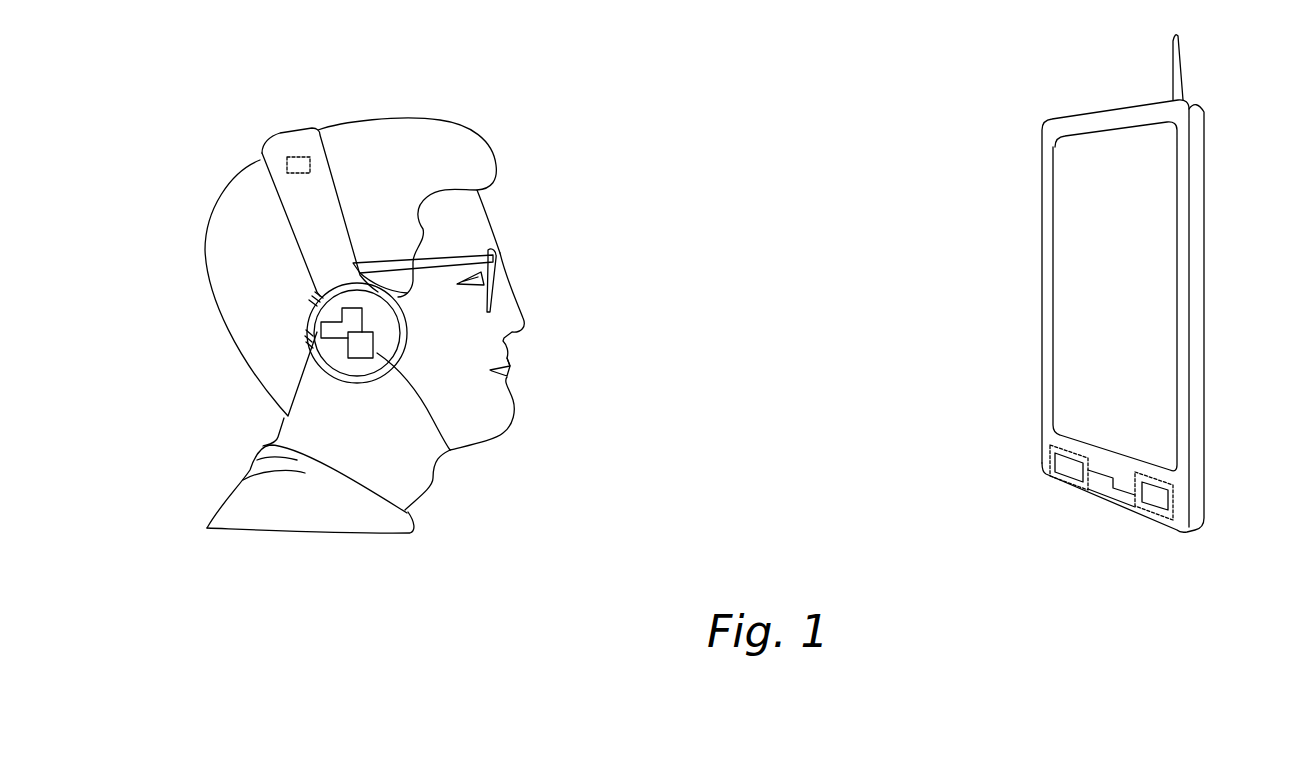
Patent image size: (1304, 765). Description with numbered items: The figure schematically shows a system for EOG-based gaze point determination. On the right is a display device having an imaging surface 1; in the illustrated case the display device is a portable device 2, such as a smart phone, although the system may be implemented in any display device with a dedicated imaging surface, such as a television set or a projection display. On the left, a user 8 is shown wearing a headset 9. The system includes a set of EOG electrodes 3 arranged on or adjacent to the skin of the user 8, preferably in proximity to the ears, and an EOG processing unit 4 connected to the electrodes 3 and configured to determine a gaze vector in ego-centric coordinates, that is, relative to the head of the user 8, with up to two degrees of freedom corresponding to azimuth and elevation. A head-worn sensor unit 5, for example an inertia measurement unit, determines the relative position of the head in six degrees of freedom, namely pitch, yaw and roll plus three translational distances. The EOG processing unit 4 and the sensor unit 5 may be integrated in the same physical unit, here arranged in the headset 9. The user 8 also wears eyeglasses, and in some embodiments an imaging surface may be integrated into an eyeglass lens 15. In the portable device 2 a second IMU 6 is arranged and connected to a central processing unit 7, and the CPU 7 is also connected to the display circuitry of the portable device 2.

The imaging surface 1 is at (1161, 323).
The portable device 2 is at (1205, 383).
The EOG electrodes 3 is at (310, 307).
The EOG processing unit 4 is at (448, 449).
The head-worn sensor unit 5 is at (298, 157).
The second IMU 6 is at (1158, 497).
The central processing unit 7 is at (1067, 467).
The user 8 is at (430, 140).
The headset 9 is at (297, 198).
The eyeglass lens 15 is at (502, 250).